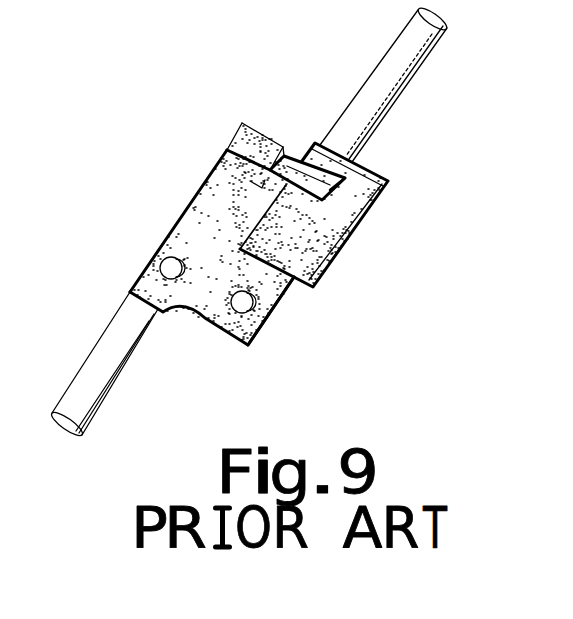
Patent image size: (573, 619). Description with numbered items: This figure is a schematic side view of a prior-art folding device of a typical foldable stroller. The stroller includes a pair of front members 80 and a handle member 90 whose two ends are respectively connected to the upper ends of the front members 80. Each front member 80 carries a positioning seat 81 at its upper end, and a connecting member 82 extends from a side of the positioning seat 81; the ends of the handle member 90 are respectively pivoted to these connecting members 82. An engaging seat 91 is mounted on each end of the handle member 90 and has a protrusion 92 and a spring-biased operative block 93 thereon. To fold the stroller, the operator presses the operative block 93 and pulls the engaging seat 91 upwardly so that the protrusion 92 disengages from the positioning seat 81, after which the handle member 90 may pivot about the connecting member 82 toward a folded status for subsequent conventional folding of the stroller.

The front member 80 is at (107, 388).
The positioning seat 81 is at (255, 208).
The connecting member 82 is at (275, 300).
The handle member 90 is at (395, 90).
The engaging seat 91 is at (316, 177).
The protrusion 92 is at (241, 142).
The spring-biased operative block 93 is at (333, 197).